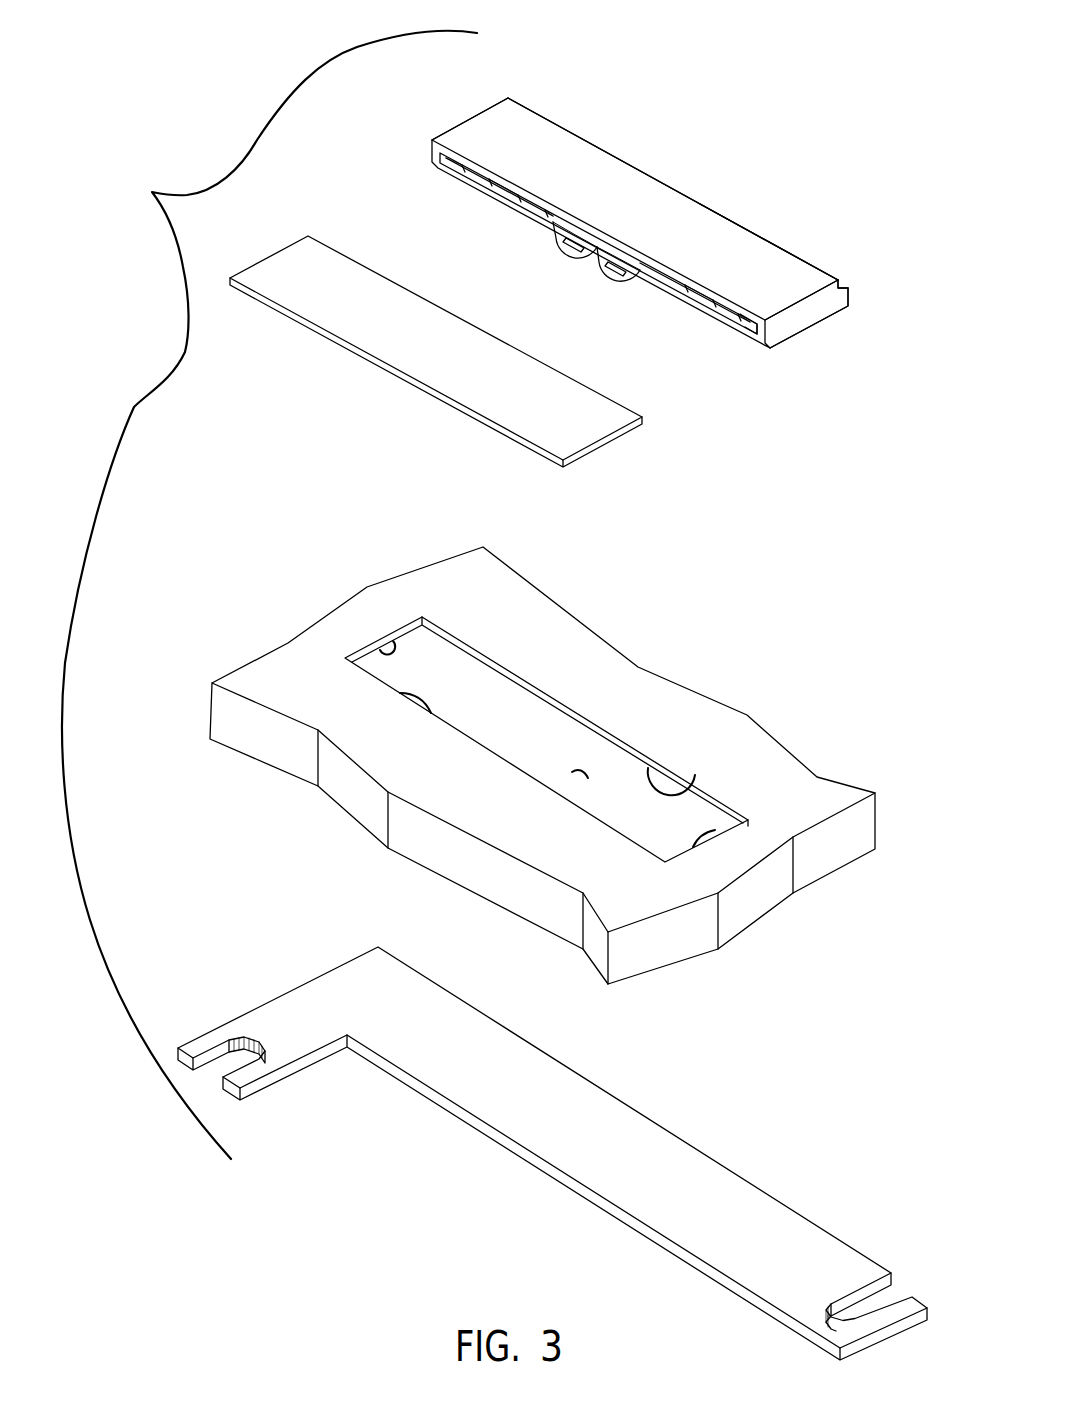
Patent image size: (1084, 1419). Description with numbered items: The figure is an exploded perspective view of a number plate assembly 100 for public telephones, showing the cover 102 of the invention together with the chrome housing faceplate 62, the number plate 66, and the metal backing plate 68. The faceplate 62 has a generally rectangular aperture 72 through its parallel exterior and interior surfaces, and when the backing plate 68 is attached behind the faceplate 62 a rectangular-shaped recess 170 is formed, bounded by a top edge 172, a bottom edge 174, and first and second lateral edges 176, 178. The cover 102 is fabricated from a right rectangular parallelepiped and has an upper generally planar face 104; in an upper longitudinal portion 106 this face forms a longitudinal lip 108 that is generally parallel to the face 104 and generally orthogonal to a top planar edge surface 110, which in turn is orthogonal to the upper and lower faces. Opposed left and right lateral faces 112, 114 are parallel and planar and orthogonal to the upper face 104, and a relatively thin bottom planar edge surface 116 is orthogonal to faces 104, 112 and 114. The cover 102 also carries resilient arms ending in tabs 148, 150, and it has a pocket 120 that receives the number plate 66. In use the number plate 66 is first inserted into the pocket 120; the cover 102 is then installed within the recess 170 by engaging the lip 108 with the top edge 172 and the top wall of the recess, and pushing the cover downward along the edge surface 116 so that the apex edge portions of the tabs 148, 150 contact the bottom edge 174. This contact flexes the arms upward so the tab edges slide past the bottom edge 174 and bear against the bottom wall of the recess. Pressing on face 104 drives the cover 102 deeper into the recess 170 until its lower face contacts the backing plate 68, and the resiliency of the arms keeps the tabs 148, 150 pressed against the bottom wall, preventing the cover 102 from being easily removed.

The number plate assembly 100 is at (269, 595).
The cover 102 is at (618, 140).
The first (upper) planar face 104 is at (679, 227).
The upper longitudinal portion 106 is at (797, 254).
The longitudinal lip 108 is at (843, 281).
The first (top) planar edge surface 110 is at (850, 298).
The second (left) lateral face 112 is at (467, 122).
The third (right) lateral face 114 is at (816, 314).
The second (bottom) planar edge surface 116 is at (742, 315).
The pocket 120 is at (474, 186).
The tab 148 is at (558, 241).
The tab 150 is at (613, 264).
The number plate 66 is at (374, 262).
The housing faceplate 62 is at (689, 680).
The aperture 72 is at (496, 705).
The recess 170 is at (572, 772).
The top edge 172 is at (695, 775).
The bottom edge 174 is at (400, 693).
The first lateral edge 176 is at (393, 641).
The second lateral edge 178 is at (715, 830).
The metal backing plate 68 is at (329, 968).